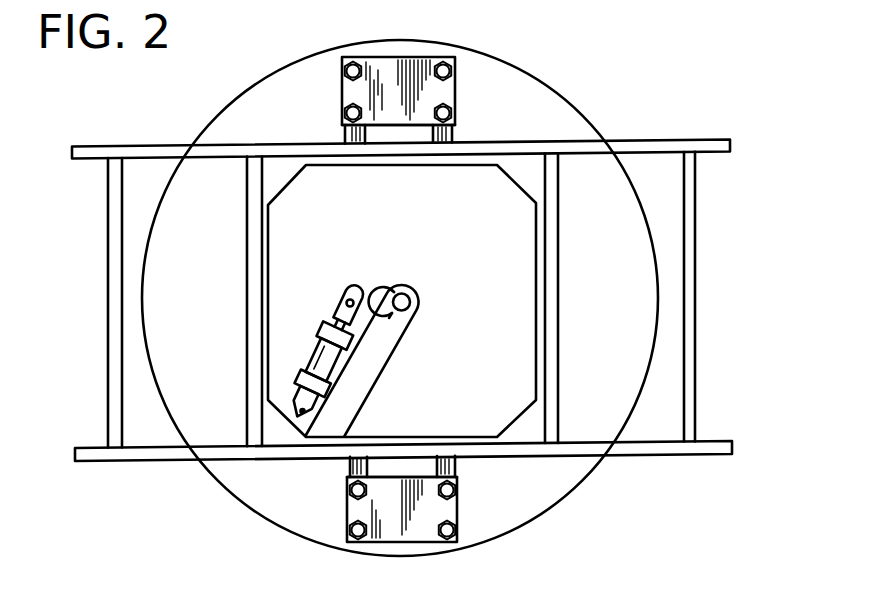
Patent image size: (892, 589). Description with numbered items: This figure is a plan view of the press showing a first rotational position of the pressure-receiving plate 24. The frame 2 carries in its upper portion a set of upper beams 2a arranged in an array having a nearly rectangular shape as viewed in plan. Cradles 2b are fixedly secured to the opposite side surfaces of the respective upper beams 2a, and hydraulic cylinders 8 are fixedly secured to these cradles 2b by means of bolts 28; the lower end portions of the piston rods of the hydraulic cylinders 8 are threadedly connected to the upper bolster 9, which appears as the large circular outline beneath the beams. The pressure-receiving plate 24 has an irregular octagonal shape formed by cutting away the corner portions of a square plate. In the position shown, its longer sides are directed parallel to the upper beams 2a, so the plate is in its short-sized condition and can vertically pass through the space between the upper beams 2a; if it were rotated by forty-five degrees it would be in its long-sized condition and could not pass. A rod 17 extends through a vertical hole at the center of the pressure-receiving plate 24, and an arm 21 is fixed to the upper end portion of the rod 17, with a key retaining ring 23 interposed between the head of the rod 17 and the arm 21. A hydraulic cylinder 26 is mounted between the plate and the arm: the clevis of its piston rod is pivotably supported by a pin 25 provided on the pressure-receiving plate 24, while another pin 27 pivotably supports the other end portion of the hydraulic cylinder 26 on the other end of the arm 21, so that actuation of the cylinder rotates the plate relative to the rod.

The frame 2 is at (432, 307).
The upper beams 2a is at (520, 147).
The cradles 2b is at (452, 135).
The hydraulic cylinders 8 is at (428, 290).
The bolts 28 is at (448, 67).
The upper bolster 9 is at (560, 477).
The pressure-receiving plate 24 is at (300, 195).
The arm 21 is at (388, 370).
The rod 17 is at (402, 289).
The key retaining ring 23 is at (415, 306).
The hydraulic cylinder 26 is at (295, 312).
The pin 25 is at (344, 298).
The pin 27 is at (297, 398).